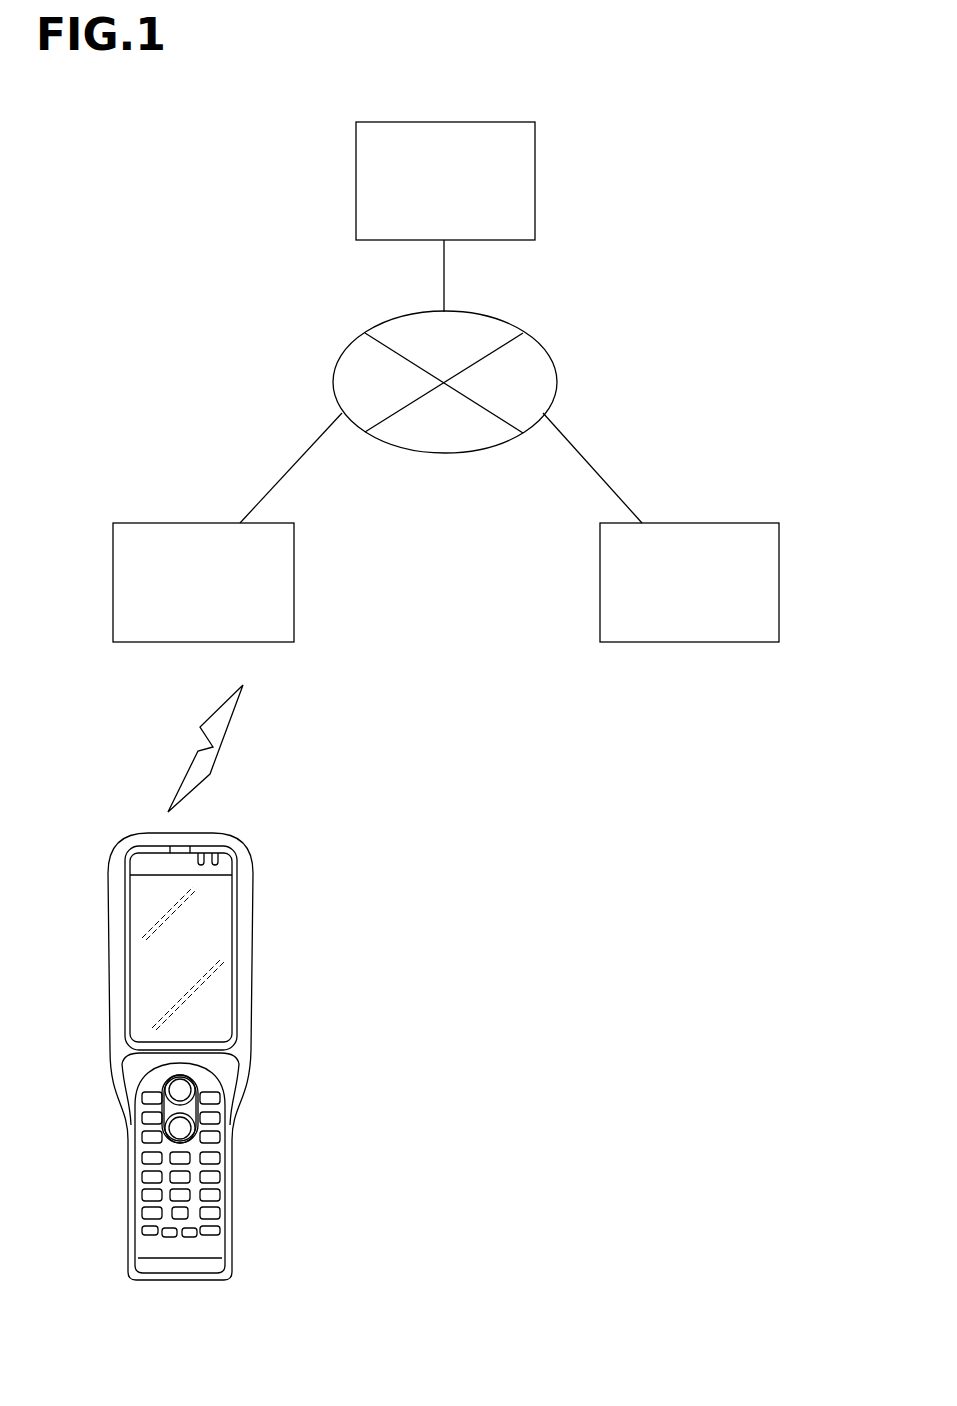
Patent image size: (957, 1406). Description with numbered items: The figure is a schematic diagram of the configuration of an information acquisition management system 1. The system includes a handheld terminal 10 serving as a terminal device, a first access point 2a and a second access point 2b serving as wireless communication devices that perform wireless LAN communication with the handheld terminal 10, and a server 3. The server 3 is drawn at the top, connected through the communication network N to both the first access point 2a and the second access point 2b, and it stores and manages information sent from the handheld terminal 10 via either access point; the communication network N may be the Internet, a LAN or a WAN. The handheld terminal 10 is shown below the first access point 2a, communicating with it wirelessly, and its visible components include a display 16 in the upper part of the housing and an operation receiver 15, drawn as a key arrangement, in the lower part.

The information acquisition management system 1 is at (712, 174).
The server 3 is at (535, 147).
The communication network N is at (507, 320).
The first access point 2a is at (153, 523).
The second access point 2b is at (708, 523).
The handheld terminal 10 is at (182, 1039).
The display 16 is at (128, 951).
The operation receiver 15 is at (137, 1160).